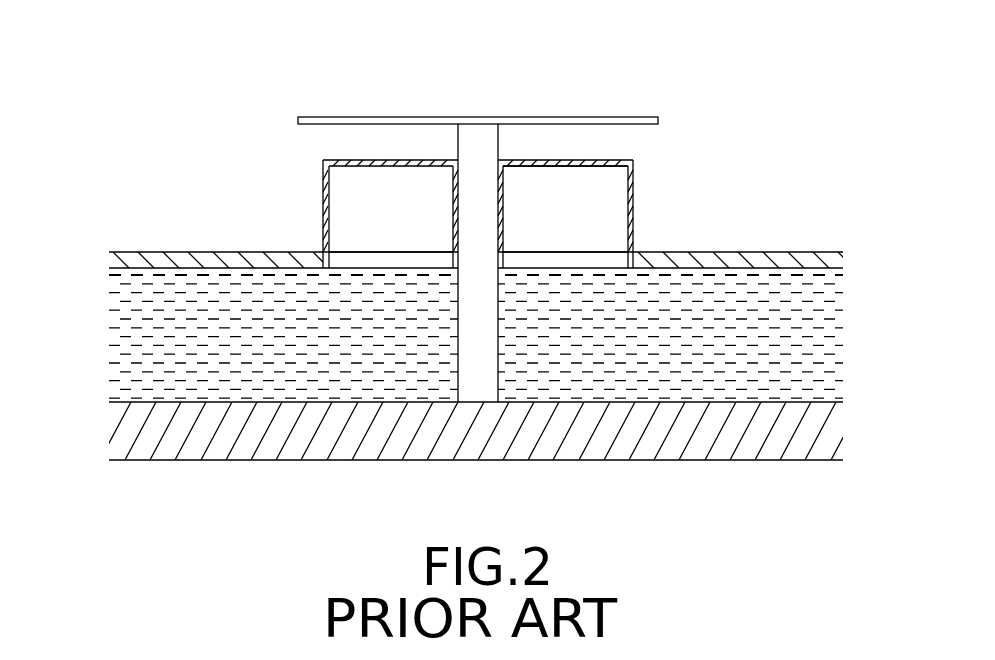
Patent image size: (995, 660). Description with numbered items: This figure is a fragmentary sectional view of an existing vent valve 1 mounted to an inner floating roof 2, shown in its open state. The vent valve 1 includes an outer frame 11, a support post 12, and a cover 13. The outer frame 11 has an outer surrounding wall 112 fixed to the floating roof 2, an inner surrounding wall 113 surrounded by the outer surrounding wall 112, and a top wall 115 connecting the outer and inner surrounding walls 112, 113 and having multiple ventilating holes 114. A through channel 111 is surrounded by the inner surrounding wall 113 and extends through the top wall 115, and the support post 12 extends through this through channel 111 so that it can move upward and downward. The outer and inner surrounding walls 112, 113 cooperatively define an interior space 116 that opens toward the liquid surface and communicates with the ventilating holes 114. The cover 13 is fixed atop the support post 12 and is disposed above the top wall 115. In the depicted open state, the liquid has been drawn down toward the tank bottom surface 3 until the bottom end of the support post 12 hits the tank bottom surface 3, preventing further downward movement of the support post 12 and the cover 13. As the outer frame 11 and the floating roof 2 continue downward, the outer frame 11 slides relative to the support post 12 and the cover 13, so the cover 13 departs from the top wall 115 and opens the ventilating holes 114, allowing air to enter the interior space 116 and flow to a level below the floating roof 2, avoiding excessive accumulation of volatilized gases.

The vent valve 1 is at (499, 265).
The inner floating roof 2 is at (777, 236).
The tank bottom surface 3 is at (132, 402).
The outer frame 11 is at (458, 157).
The through channel 111 is at (497, 168).
The outer surrounding wall 112 is at (323, 192).
The inner surrounding wall 113 is at (452, 183).
The ventilating holes 114 is at (377, 160).
The top wall 115 is at (563, 163).
The interior space 116 is at (598, 210).
The support post 12 is at (495, 385).
The cover 13 is at (314, 117).